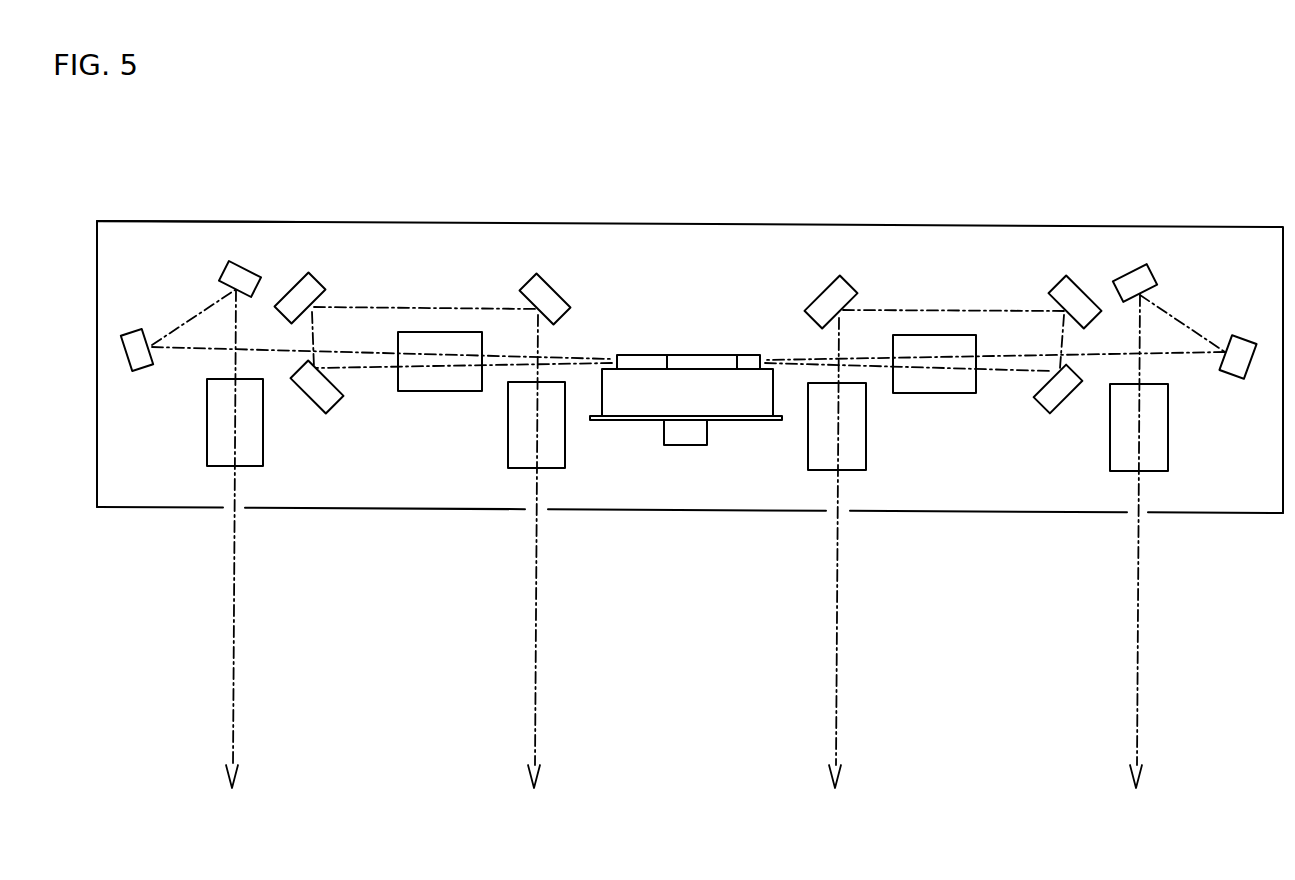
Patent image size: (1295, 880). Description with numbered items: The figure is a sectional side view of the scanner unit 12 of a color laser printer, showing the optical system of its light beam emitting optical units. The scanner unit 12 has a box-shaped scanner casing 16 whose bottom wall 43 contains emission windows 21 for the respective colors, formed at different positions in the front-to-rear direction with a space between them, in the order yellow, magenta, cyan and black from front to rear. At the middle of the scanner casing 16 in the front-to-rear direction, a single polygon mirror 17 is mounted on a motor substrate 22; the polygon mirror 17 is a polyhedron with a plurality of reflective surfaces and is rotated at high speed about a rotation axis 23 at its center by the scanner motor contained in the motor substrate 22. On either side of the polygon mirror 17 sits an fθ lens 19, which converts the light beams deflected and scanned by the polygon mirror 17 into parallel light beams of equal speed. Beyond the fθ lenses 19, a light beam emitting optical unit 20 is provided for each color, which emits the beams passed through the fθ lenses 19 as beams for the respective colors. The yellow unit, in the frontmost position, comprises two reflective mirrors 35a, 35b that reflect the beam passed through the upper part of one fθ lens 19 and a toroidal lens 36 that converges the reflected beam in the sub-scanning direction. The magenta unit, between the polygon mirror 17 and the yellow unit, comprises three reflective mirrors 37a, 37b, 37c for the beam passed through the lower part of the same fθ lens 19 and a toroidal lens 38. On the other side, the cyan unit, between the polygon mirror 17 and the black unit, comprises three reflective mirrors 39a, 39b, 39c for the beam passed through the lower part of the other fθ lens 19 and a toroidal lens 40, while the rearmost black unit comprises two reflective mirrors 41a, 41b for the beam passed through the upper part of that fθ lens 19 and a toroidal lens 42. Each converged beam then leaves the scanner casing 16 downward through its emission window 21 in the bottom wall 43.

The scanner unit 12 is at (590, 212).
The scanner casing 16 is at (118, 221).
The polygon mirror 17 is at (729, 355).
The fθ lens 19 is at (438, 383).
The light beam emitting optical unit 20 is at (211, 246).
The emission window 21 is at (246, 508).
The motor substrate 22 is at (627, 410).
The rotation axis 23 is at (672, 435).
The reflective mirror 35a is at (1237, 368).
The reflective mirror 35b is at (1143, 282).
The toroidal lens 36 is at (1162, 455).
The reflective mirror 37a is at (1045, 402).
The reflective mirror 37b is at (1068, 295).
The reflective mirror 37c is at (840, 294).
The toroidal lens 38 is at (855, 458).
The reflective mirror 39a is at (313, 392).
The reflective mirror 39b is at (310, 290).
The reflective mirror 39c is at (546, 297).
The toroidal lens 40 is at (517, 455).
The reflective mirror 41a is at (148, 366).
The reflective mirror 41b is at (246, 277).
The toroidal lens 42 is at (212, 435).
The bottom wall 43 is at (990, 512).